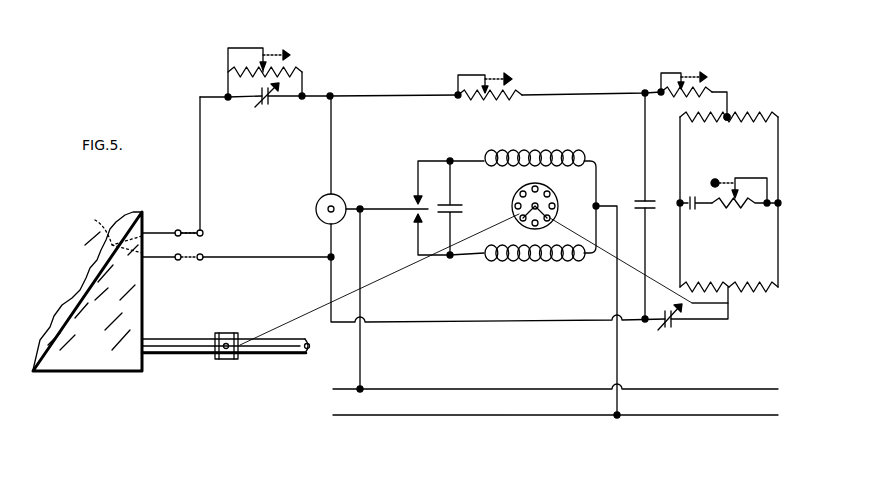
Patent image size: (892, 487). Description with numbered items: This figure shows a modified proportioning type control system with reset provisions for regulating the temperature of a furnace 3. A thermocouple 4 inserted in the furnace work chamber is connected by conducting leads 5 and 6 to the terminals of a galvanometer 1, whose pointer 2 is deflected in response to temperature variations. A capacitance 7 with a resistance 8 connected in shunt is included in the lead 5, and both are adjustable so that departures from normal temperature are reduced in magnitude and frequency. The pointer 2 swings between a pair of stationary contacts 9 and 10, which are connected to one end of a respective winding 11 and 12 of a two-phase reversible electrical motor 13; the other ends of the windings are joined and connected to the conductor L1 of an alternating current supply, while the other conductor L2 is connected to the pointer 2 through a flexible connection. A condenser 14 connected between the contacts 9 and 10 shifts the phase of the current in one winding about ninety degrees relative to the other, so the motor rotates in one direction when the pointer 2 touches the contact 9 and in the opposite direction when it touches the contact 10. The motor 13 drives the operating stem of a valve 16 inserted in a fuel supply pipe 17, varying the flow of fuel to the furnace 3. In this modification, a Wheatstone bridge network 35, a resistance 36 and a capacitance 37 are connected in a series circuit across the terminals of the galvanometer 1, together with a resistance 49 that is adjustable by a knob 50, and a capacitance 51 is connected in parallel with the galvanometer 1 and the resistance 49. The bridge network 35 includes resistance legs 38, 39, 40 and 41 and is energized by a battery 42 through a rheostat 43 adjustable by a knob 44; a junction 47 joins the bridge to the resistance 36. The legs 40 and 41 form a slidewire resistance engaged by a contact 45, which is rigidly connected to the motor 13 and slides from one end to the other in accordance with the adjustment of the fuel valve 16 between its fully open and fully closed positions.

The galvanometer 1 is at (338, 198).
The pointer 2 is at (378, 208).
The furnace 3 is at (144, 327).
The thermocouple 4 is at (112, 231).
The conducting lead 5 is at (172, 232).
The conducting lead 6 is at (162, 259).
The capacitance 7 is at (265, 110).
The resistance 8 is at (226, 92).
The stationary contact 9 is at (420, 198).
The stationary contact 10 is at (421, 224).
The winding 11 is at (544, 150).
The winding 12 is at (538, 262).
The two-phase reversible electrical motor 13 is at (507, 192).
The condenser 14 is at (466, 205).
The valve 16 is at (224, 337).
The fuel supply pipe 17 is at (278, 355).
The Wheatstone bridge network 35 is at (742, 157).
The resistance 36 is at (668, 80).
The capacitance 37 is at (670, 333).
The resistance leg 38 is at (680, 117).
The resistance leg 39 is at (770, 116).
The resistance leg 40 is at (697, 284).
The resistance leg 41 is at (747, 284).
The battery 42 is at (691, 212).
The rheostat 43 is at (736, 209).
The knob 44 is at (712, 182).
The contact 45 is at (727, 296).
The junction 47 is at (728, 117).
The resistance 49 is at (484, 102).
The knob 50 is at (510, 76).
The capacitance 51 is at (655, 201).
The conductor of alternating current supply source L1 is at (456, 389).
The conductor of alternating current supply source L2 is at (450, 416).